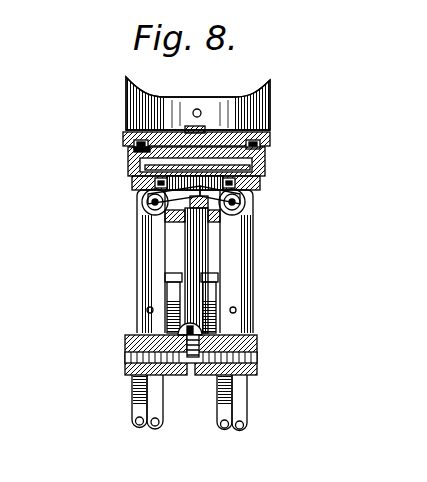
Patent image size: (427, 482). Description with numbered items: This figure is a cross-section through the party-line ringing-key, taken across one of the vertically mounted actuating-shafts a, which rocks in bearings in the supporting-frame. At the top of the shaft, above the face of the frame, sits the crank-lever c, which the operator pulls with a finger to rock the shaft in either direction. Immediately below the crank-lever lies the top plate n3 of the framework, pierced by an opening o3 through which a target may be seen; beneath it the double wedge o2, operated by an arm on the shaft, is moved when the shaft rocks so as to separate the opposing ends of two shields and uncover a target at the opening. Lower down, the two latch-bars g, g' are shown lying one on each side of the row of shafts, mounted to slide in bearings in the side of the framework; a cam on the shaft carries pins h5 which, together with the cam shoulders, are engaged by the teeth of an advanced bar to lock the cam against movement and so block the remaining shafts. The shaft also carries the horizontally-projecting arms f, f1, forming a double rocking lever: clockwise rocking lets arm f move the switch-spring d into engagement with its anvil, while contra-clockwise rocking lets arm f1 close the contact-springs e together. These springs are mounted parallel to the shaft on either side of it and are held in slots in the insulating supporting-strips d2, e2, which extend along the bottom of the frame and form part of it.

The crank-lever c is at (270, 108).
The top plate n3 is at (268, 143).
The opening o3 is at (327, 125).
The double wedge o2 is at (137, 147).
The latch-bar g is at (218, 172).
The latch-bar g' is at (167, 169).
The pin h5 is at (320, 218).
The switch-spring d is at (150, 213).
The contact-spring e is at (243, 204).
The arm f is at (162, 211).
The arm f1 is at (236, 207).
The actuating-shaft a is at (185, 258).
The insulating supporting-strip d2 is at (143, 335).
The insulating supporting-strip e2 is at (236, 345).